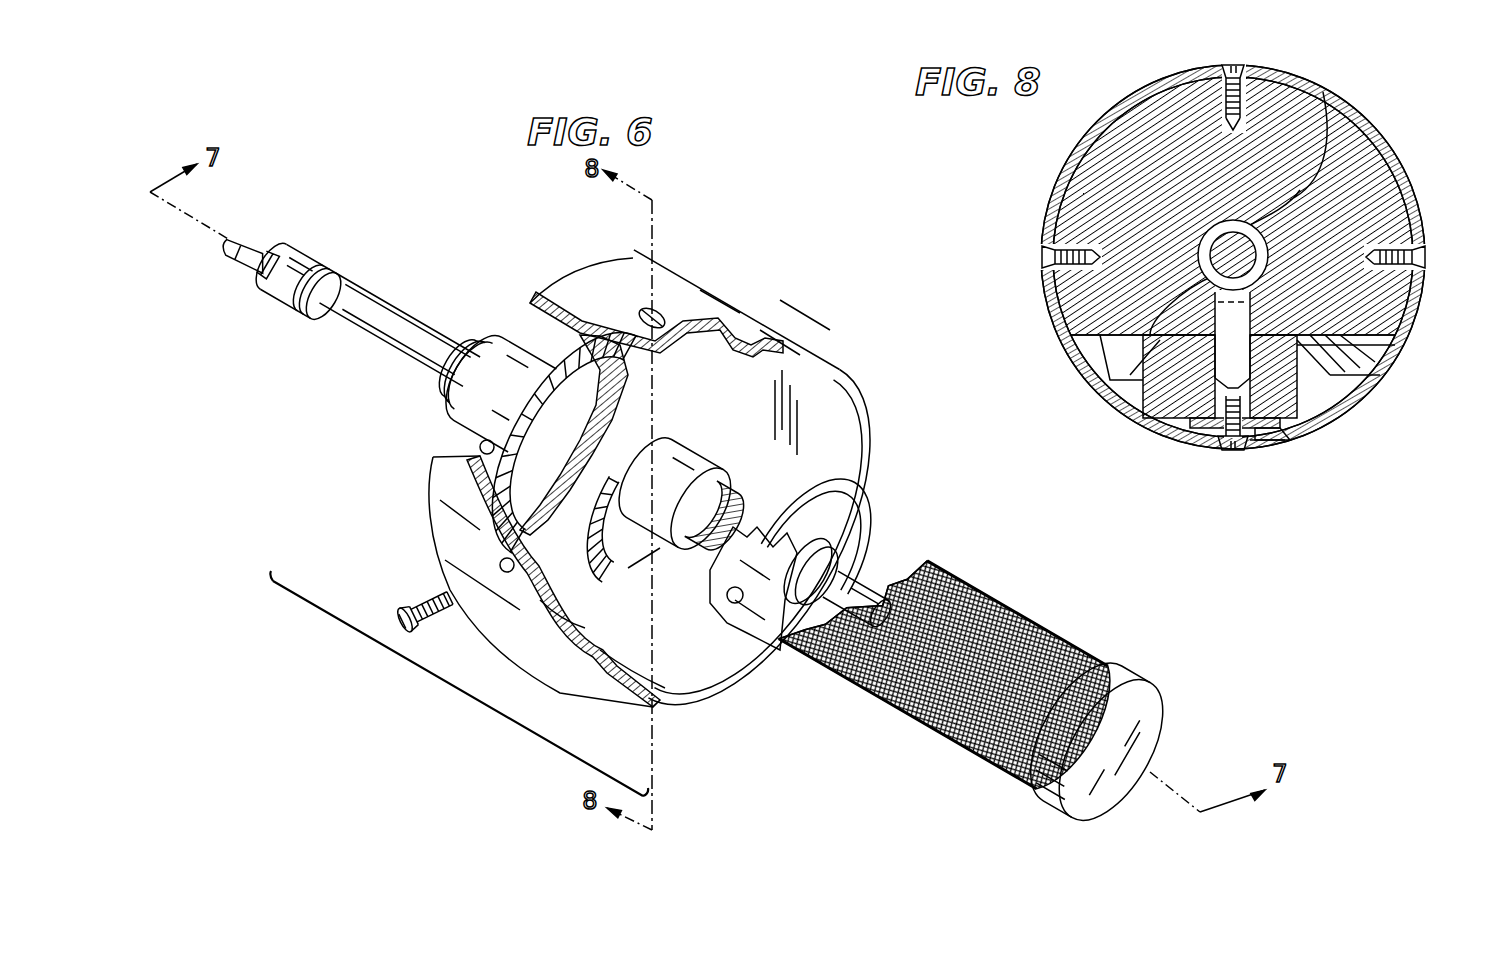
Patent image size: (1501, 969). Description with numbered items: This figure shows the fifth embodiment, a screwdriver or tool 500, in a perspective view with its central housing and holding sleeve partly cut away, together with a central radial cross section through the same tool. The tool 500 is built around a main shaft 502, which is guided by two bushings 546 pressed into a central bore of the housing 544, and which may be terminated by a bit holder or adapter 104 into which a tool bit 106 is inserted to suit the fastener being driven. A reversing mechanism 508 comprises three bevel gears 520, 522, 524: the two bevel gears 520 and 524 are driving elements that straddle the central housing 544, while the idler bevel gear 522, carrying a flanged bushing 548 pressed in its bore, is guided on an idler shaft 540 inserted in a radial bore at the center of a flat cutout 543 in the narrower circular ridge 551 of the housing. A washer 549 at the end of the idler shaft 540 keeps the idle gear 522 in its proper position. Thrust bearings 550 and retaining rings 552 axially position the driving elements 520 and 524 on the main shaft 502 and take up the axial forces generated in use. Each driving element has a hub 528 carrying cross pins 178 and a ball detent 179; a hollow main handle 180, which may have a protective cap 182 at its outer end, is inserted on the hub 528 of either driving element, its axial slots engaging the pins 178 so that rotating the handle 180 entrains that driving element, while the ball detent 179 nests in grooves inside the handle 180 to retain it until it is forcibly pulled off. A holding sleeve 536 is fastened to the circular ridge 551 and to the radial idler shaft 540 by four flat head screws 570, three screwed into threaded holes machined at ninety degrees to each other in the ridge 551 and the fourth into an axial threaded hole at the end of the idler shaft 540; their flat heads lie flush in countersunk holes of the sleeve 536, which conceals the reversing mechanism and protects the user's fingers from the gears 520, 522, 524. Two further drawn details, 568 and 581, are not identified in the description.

In FIG. 6, the bit holder or adapter 104 is at (324, 251).
In FIG. 6, the tool bit 106 is at (262, 239).
In FIG. 6, the cross pins 178 is at (455, 460).
In FIG. 6, the ball detent 179 is at (480, 448).
In FIG. 6, the main handle 180 is at (1108, 669).
In FIG. 6, the protective cap 182 is at (1160, 721).
In FIG. 6, the screwdriver or tool 500 is at (437, 180).
In FIG. 8, the screwdriver or tool 500 is at (967, 140).
In FIG. 6, the main shaft 502 is at (360, 301).
In FIG. 8, the main shaft 502 is at (1090, 391).
In FIG. 6, the reversing mechanism 508 is at (459, 683).
In FIG. 6, the bevel gear 520 is at (545, 359).
In FIG. 6, the idler bevel gear 522 is at (615, 669).
In FIG. 8, the idler bevel gear 522 is at (1370, 401).
In FIG. 6, the bevel gear 524 is at (700, 621).
In FIG. 6, the hub 528 is at (470, 388).
In FIG. 6, the holding sleeve 536 is at (600, 273).
In FIG. 8, the holding sleeve 536 is at (1290, 76).
In FIG. 8, the idler shaft 540 is at (1210, 456).
In FIG. 6, the flat cutout 543 is at (565, 616).
In FIG. 8, the flat cutout 543 is at (1395, 348).
In FIG. 6, the housing 544 is at (688, 453).
In FIG. 8, the housing 544 is at (1323, 95).
In FIG. 6, the bushings 546 is at (720, 481).
In FIG. 8, the flanged bushing 548 is at (1290, 441).
In FIG. 8, the washer 549 is at (1270, 456).
In FIG. 6, the thrust bearings 550 is at (468, 364).
In FIG. 6, the circular ridge 551 is at (783, 401).
In FIG. 8, the circular ridge 551 is at (1350, 206).
In FIG. 6, the retaining rings 552 is at (458, 372).
In FIG. 6, the pivot pin 568 is at (500, 565).
In FIG. 6, the flat head screws 570 is at (652, 319).
In FIG. 8, the flat head screws 570 is at (1228, 71).
In FIG. 6, the gear tooth 581 is at (645, 572).